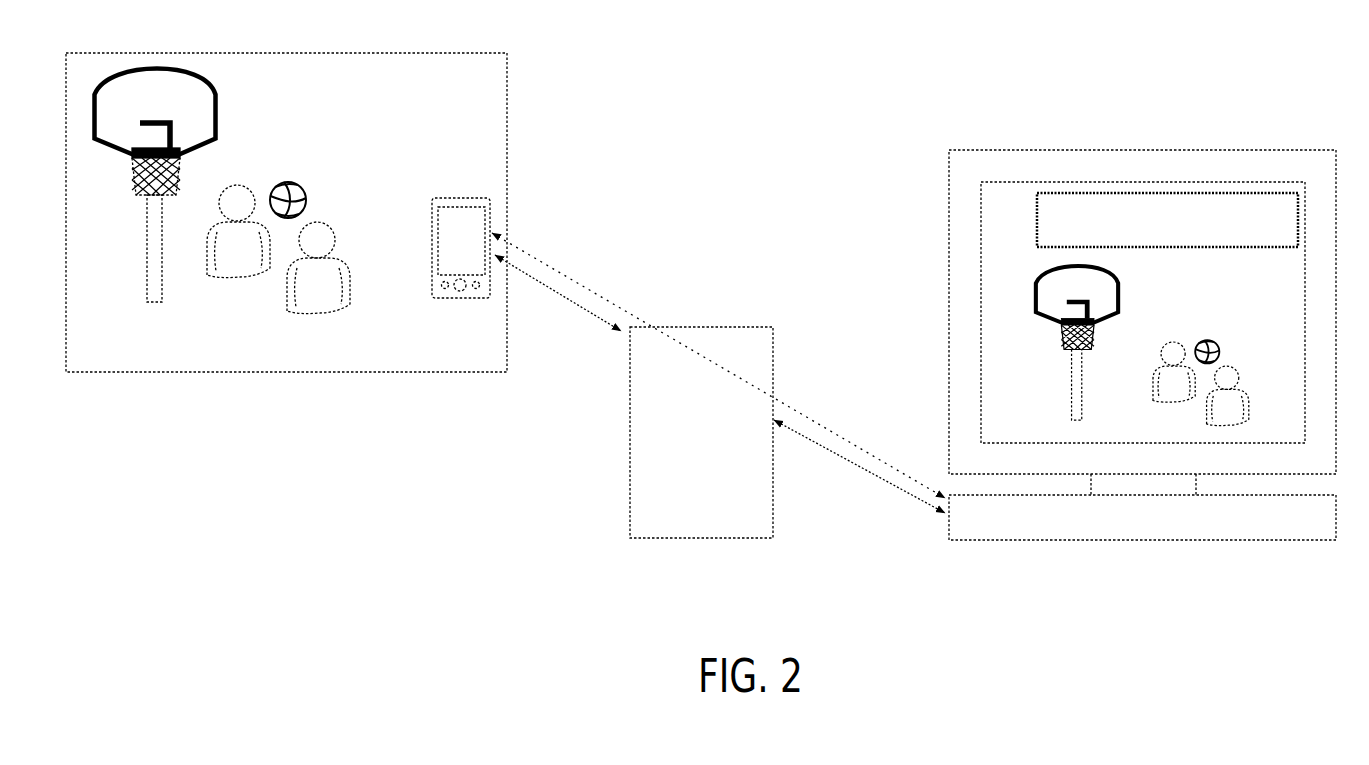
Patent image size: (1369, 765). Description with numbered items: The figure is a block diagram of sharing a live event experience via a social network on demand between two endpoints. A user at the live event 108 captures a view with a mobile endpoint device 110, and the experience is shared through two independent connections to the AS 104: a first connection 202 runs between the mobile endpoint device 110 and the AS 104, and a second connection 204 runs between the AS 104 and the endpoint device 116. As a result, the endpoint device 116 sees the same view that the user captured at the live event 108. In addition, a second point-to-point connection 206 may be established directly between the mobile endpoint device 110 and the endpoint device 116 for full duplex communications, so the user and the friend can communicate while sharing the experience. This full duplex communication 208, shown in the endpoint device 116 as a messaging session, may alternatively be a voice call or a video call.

The AS 104 is at (686, 458).
The live event 108 is at (270, 362).
The mobile endpoint device 110 is at (460, 197).
The endpoint device 116 is at (1142, 307).
The first connection 202 is at (557, 293).
The second connection 204 is at (857, 467).
The second point-to-point connection 206 is at (820, 427).
The communication 208 is at (1061, 193).